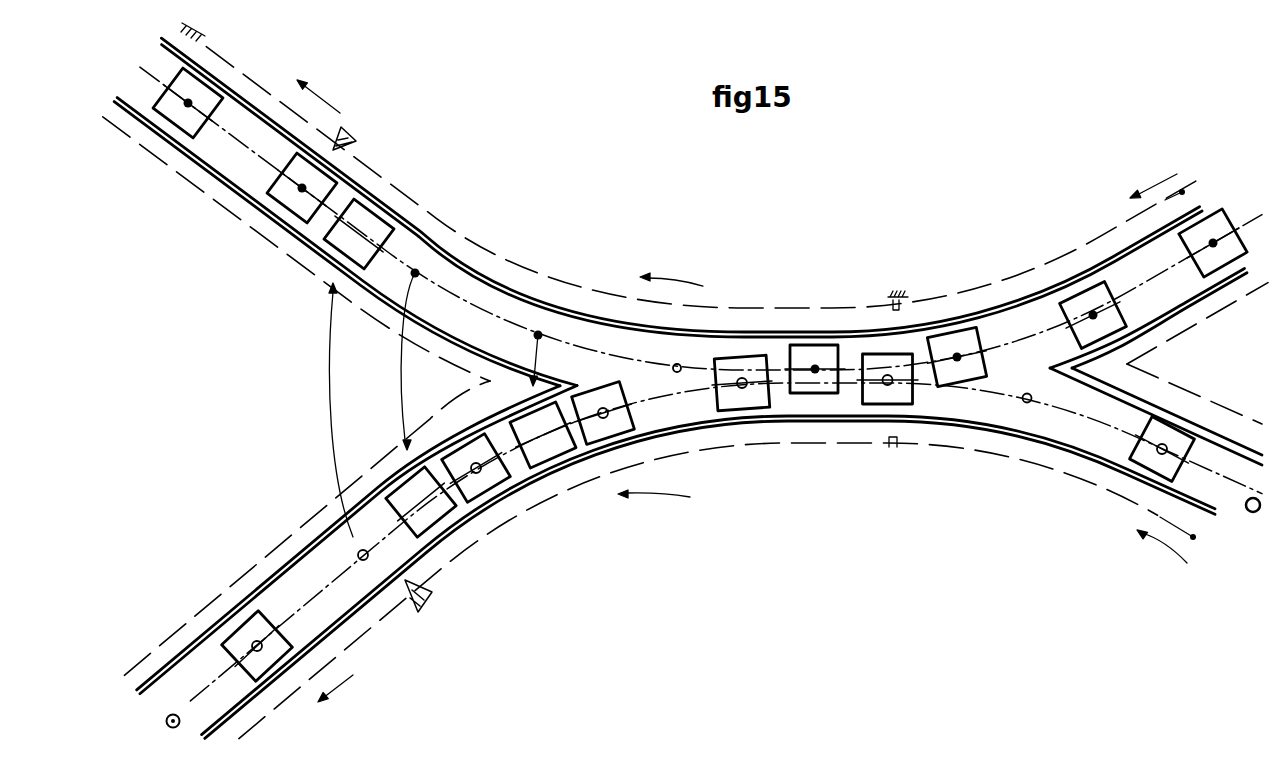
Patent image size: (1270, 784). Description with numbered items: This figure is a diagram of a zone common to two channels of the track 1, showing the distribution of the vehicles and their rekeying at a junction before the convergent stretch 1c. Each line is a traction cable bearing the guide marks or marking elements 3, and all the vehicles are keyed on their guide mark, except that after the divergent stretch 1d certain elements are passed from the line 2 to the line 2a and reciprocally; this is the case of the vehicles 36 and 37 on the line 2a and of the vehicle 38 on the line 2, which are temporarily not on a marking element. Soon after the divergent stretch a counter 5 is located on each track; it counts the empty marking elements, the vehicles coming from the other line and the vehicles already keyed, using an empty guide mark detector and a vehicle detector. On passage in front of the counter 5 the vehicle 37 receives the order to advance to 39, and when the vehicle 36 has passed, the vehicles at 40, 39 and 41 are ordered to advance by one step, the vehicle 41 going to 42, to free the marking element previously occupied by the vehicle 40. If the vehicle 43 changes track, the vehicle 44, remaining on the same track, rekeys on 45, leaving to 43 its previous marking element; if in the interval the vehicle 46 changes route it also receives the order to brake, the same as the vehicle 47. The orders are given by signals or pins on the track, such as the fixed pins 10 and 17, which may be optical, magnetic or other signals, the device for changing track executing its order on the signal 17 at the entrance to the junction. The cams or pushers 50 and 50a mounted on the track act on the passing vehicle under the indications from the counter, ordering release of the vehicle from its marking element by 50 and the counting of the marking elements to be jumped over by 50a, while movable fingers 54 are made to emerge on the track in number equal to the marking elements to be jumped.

The track 1 is at (567, 280).
The convergent stretch 1c is at (1135, 366).
The divergent stretch 1d is at (490, 384).
The line 2 is at (494, 246).
The line 2a is at (300, 603).
The marking element 3 is at (679, 366).
The counter 5 is at (355, 140).
The fixed pin 10 is at (1188, 365).
The fixed pin 17 is at (897, 371).
The vehicle 36 is at (545, 452).
The vehicle 37 is at (430, 524).
The vehicle 38 is at (367, 228).
The vehicle position 39 is at (363, 560).
The vehicle 40 is at (483, 486).
The vehicle 41 is at (268, 660).
The vehicle position 42 is at (174, 749).
The vehicle 43 is at (826, 354).
The vehicle 44 is at (882, 396).
The vehicle position 45 is at (1026, 402).
The vehicle 46 is at (957, 345).
The vehicle 47 is at (1175, 442).
The cam 50 is at (273, 45).
The cam 50a is at (193, 32).
The movable finger 54 is at (207, 33).